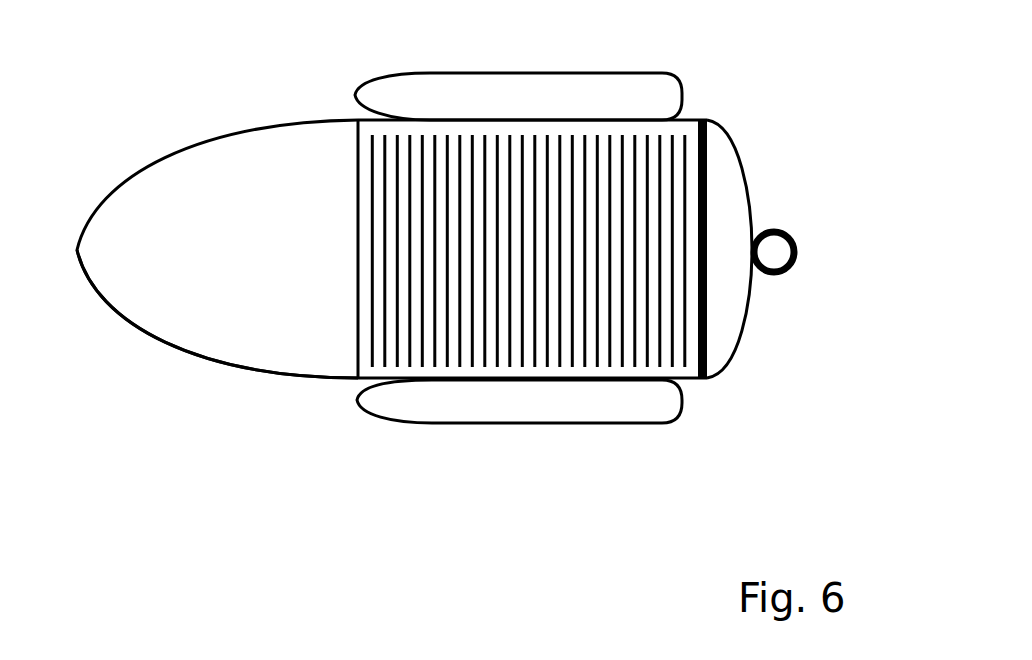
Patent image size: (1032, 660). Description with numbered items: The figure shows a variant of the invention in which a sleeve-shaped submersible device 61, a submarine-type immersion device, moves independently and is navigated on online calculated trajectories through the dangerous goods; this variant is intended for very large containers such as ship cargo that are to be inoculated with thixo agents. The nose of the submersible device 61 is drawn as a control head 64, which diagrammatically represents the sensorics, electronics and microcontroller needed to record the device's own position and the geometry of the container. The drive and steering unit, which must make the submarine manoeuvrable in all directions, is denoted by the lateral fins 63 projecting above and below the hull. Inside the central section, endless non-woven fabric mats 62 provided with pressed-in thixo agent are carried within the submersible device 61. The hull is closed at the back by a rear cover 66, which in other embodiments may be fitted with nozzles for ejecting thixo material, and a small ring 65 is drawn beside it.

The submersible device 61 is at (208, 130).
The endless non-woven fabric mats 62 is at (667, 227).
The lateral fins 63 is at (552, 412).
The control head 64 is at (232, 325).
The attachment ring 65 is at (767, 229).
The rear cover 66 is at (726, 317).